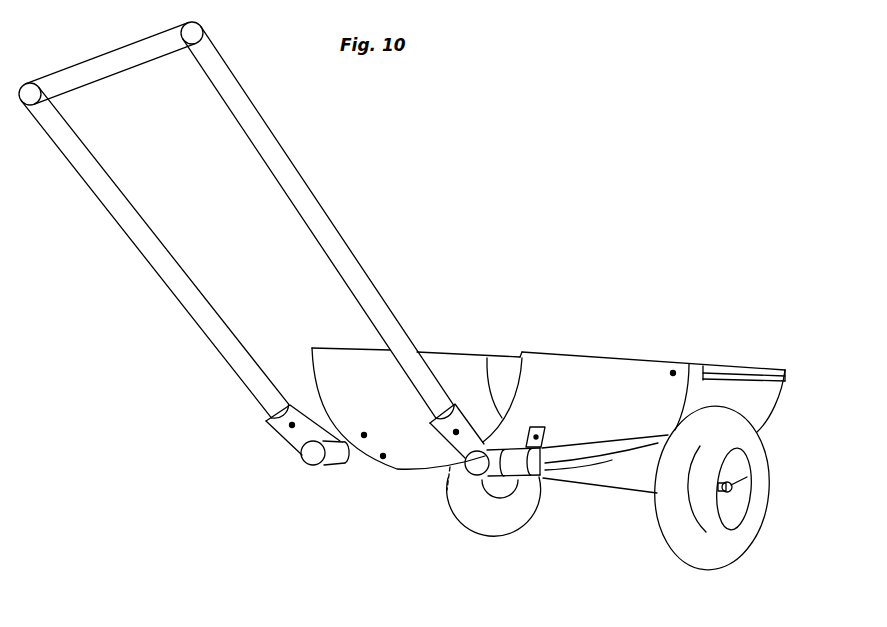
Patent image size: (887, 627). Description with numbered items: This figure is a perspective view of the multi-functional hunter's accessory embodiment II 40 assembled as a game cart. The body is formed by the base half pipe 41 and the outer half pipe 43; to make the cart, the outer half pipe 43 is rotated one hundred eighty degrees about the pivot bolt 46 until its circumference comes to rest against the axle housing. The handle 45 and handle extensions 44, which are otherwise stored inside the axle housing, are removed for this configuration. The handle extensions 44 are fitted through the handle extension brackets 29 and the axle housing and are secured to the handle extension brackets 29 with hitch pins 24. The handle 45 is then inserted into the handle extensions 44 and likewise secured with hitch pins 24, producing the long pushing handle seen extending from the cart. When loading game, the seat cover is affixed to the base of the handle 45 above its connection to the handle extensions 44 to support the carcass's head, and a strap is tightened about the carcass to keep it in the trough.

The hitch pins 24 is at (535, 452).
The handle extension bracket 29 is at (540, 450).
The multi-functional hunter's accessory embodiment II 40 is at (647, 282).
The base half pipe 41 is at (785, 390).
The outer half pipe 43 is at (405, 472).
The handle extension 44 is at (326, 470).
The handle 45 is at (143, 263).
The pivot bolt 46 is at (503, 369).